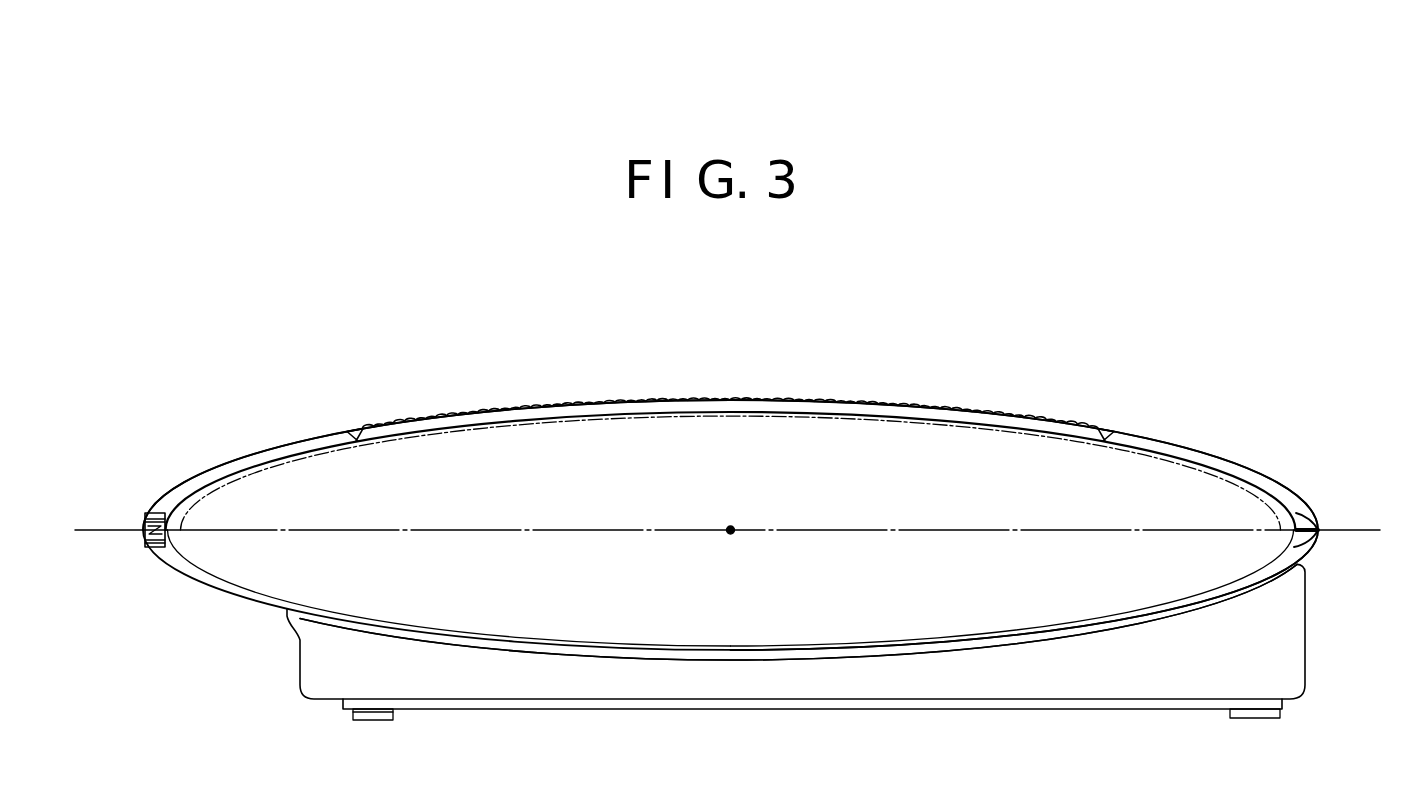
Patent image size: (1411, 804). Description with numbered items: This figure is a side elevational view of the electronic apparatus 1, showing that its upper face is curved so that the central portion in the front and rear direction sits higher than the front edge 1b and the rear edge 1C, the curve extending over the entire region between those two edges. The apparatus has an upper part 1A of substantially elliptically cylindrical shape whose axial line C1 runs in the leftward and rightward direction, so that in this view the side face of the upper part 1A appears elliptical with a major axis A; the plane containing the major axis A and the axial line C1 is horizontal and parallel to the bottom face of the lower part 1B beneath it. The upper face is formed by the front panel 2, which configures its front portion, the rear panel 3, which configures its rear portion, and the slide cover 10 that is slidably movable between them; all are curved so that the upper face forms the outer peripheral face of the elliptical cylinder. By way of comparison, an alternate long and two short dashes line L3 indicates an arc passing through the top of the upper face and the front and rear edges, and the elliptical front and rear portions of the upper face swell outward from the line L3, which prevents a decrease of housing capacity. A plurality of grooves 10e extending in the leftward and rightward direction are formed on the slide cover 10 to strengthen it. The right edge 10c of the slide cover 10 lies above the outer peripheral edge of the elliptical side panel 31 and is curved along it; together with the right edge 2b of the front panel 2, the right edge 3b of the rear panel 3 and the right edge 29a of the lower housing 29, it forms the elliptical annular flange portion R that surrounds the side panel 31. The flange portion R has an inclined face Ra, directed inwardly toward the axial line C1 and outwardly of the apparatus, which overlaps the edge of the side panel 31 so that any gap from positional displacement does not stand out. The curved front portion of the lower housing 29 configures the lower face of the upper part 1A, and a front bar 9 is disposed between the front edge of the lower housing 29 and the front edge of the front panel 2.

The electronic apparatus 1 is at (770, 325).
The upper part 1A is at (222, 618).
The lower part 1B is at (280, 672).
The front edge 1b is at (143, 518).
The rear edge 1C is at (1318, 522).
The front panel 2 is at (223, 465).
The right edge of the front panel 2b is at (263, 464).
The rear panel 3 is at (1190, 449).
The right edge of the rear panel 3b is at (1220, 470).
The front bar 9 is at (150, 546).
The slide cover 10 is at (880, 385).
The right edge of the slide cover 10c is at (1000, 416).
The grooves 10e is at (540, 408).
The lower housing 29 is at (753, 688).
The right edge of the lower housing 29a is at (649, 651).
The side panel 31 is at (1025, 472).
The major axis A is at (716, 532).
The axial line C1 is at (732, 527).
The alternate long and two short dashes line L3 is at (1130, 452).
The flange portion R is at (1062, 639).
The inclined face Ra is at (973, 641).